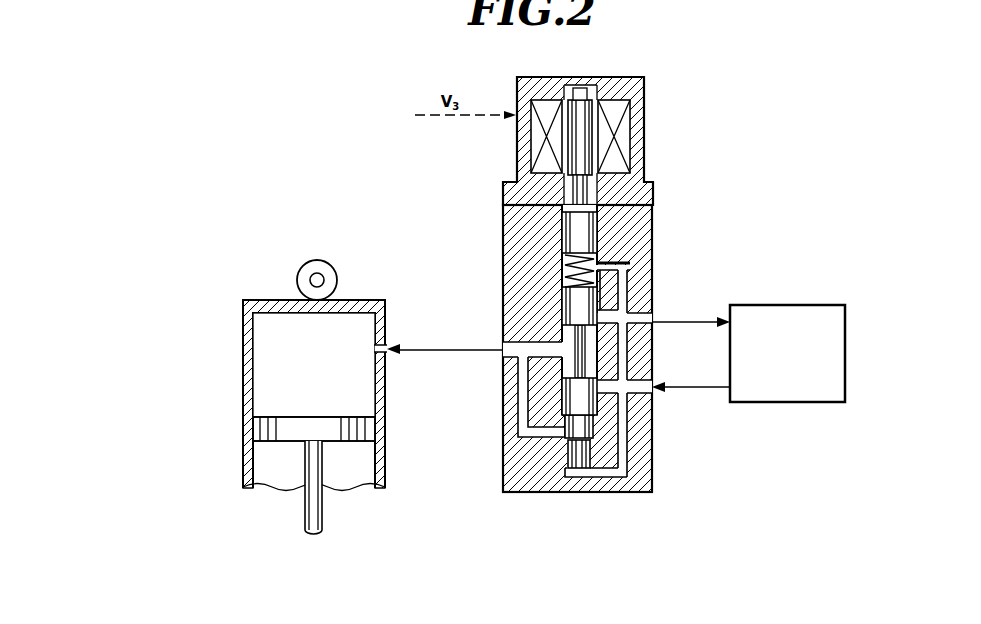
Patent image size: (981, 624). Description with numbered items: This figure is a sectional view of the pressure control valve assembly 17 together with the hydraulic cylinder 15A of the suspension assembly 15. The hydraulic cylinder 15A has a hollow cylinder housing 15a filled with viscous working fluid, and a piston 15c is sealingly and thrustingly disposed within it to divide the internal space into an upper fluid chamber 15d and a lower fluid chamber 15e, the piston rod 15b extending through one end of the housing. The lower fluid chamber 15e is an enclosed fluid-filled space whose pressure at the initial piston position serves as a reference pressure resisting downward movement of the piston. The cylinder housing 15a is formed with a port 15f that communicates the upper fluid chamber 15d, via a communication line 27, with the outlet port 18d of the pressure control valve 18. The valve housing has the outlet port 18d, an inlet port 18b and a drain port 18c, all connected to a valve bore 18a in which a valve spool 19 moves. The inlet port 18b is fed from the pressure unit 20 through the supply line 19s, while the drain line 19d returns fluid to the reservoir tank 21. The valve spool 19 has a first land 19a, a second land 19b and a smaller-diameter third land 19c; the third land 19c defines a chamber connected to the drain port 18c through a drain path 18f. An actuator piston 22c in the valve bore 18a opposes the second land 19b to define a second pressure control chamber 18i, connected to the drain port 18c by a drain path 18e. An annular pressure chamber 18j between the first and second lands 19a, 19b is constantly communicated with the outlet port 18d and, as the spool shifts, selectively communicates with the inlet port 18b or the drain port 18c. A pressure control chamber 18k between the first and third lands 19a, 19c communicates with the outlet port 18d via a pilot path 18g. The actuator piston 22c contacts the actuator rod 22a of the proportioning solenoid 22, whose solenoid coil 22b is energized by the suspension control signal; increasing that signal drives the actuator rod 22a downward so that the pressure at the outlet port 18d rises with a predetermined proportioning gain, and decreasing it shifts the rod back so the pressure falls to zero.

The suspension assembly 15 is at (340, 300).
The cylinder housing 15a is at (250, 385).
The hydraulic cylinder 15A is at (233, 425).
The piston rod 15b is at (323, 512).
The piston 15c is at (363, 433).
The upper fluid chamber 15d is at (270, 340).
The lower fluid chamber 15e is at (267, 468).
The port 15f is at (388, 345).
The pressure control valve (17FL~RR) 17 is at (668, 194).
The pressure control valve 18 is at (510, 494).
The valve bore 18a is at (590, 258).
The inlet port 18b is at (647, 393).
The drain port 18c is at (628, 310).
The outlet port 18d is at (557, 343).
The drain path 18e is at (600, 260).
The drain path 18f is at (608, 492).
The pilot path 18g is at (543, 435).
The second pressure control chamber 18i is at (600, 228).
The annular pressure chamber 18j is at (624, 328).
The pressure control chamber 18k is at (573, 445).
The valve spool 19 is at (503, 402).
The first land 19a is at (563, 393).
The second land 19b is at (570, 306).
The third land 19c is at (560, 466).
The drain line 19d is at (687, 324).
The supply line 19s is at (672, 384).
The pressure unit 20 is at (781, 305).
The reservoir tank 21 is at (580, 280).
The proportioning solenoid 22 is at (645, 117).
The actuator rod 22a is at (583, 193).
The solenoid coil 22b is at (617, 105).
The actuator piston 22c is at (570, 214).
The communication line 27 is at (421, 353).